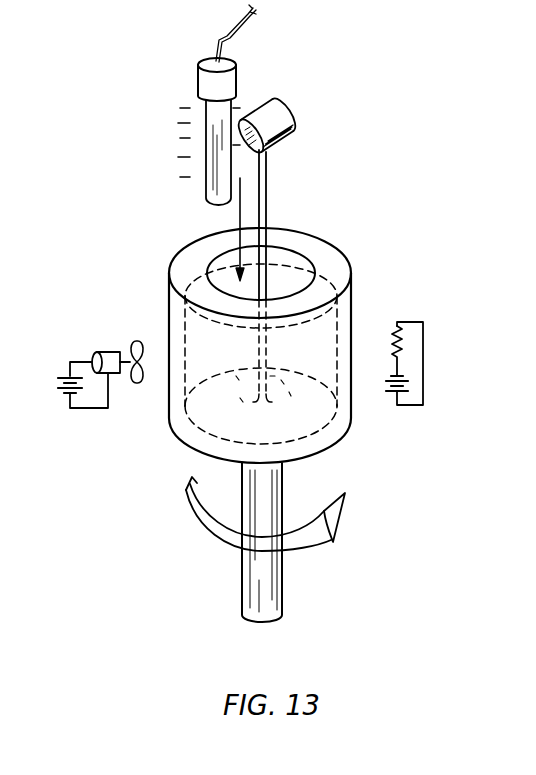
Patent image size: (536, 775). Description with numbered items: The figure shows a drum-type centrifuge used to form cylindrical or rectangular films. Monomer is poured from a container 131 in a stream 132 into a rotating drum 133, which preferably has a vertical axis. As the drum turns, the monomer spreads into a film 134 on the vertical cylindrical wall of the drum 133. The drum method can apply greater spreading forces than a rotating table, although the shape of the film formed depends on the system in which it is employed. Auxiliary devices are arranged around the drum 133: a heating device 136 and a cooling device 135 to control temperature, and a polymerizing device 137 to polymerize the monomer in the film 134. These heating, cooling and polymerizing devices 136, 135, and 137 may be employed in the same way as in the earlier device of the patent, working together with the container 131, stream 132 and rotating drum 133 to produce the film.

The container 131 is at (295, 126).
The stream 132 is at (268, 192).
The rotating drum 133 is at (350, 262).
The film 134 is at (337, 328).
The cooling device 135 is at (83, 410).
The heating device 136 is at (424, 358).
The polymerizing device 137 is at (237, 73).